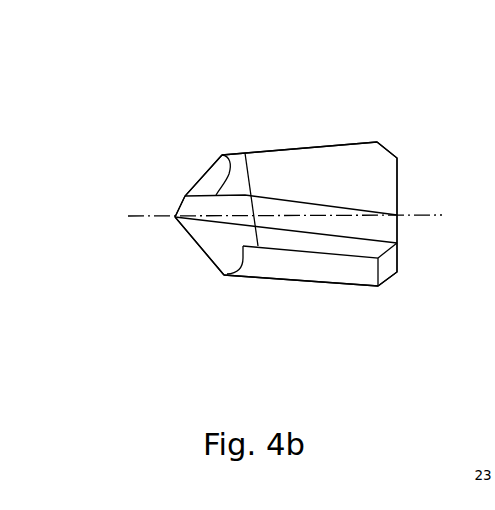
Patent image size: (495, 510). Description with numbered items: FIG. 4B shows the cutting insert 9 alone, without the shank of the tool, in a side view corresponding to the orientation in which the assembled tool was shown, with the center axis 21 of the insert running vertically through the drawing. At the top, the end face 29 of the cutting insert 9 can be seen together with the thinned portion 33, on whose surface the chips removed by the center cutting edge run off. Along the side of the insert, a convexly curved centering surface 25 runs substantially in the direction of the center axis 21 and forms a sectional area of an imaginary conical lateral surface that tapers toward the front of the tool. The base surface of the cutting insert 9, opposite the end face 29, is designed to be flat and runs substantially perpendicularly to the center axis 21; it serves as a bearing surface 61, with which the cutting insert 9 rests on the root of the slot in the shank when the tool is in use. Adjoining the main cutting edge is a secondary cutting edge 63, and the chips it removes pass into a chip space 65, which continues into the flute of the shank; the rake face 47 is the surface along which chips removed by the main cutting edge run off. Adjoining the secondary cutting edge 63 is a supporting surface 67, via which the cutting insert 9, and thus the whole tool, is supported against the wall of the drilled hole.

The cutting insert 9 is at (381, 131).
The center axis 21 is at (148, 214).
The centering surface 25 is at (287, 263).
The end face 29 is at (191, 185).
The thinned portion 33 is at (218, 181).
The rake face 47 is at (237, 195).
The bearing surface 61 is at (397, 182).
The secondary cutting edge 63 is at (273, 197).
The chip space 65 is at (348, 185).
The supporting surface 67 is at (383, 223).